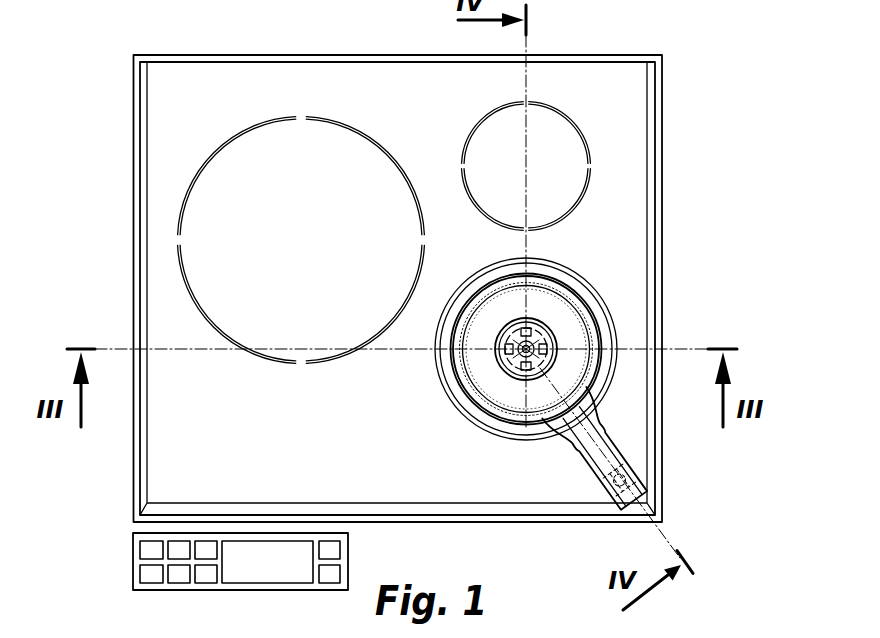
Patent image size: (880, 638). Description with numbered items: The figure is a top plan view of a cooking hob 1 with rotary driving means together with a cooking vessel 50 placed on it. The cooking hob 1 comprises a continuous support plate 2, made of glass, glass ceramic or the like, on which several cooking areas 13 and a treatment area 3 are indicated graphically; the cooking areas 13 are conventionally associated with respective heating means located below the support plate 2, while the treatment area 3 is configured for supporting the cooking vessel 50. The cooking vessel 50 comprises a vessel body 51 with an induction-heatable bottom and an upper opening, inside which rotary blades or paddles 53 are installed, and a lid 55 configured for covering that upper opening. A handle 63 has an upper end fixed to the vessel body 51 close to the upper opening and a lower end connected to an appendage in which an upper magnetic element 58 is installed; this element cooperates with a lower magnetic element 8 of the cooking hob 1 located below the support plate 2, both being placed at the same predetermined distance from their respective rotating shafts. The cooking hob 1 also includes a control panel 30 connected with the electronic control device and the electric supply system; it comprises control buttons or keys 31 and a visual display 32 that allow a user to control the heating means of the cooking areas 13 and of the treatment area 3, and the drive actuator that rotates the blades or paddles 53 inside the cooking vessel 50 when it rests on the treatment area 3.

The cooking hob 1 is at (397, 318).
The support plate 2 is at (375, 78).
The treatment area 3 is at (470, 423).
The cooking areas 13 is at (180, 253).
The control panel 30 is at (201, 567).
The control buttons or keys 31 is at (137, 577).
The visual display 32 is at (277, 568).
The cooking vessel 50 is at (604, 368).
The vessel body 51 is at (563, 280).
The rotary blades or paddles 53 is at (550, 328).
The lid 55 is at (512, 402).
The handle 63 is at (650, 447).
The lower magnetic element 8 is at (680, 476).
The upper magnetic element 58 is at (622, 466).